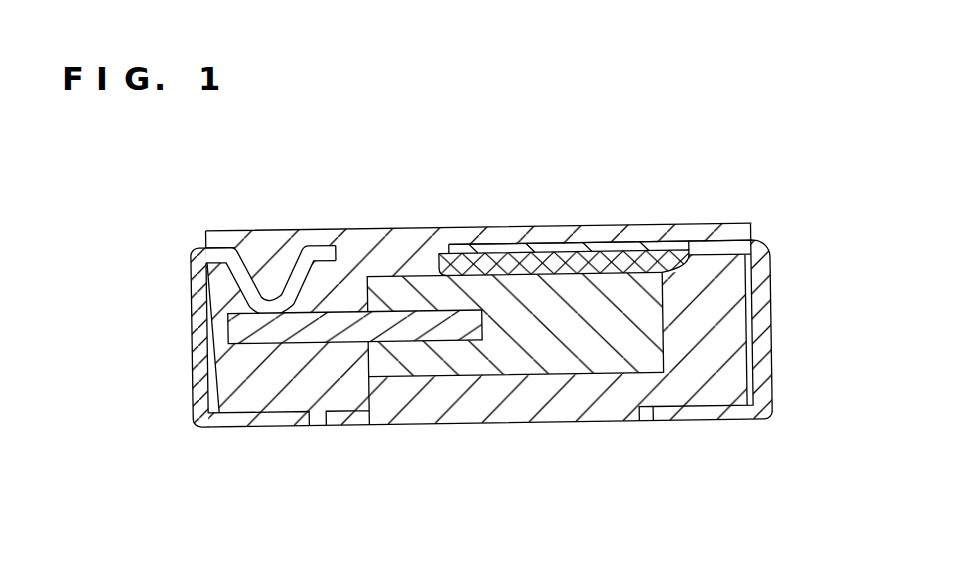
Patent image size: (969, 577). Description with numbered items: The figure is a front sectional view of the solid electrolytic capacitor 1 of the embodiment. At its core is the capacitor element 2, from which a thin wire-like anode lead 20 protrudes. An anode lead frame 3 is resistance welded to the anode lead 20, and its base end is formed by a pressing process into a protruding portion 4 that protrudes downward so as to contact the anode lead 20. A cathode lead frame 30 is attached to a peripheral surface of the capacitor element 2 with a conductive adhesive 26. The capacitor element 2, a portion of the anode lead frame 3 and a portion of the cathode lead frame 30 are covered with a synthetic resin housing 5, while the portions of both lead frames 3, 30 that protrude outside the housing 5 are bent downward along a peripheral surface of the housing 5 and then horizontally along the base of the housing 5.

The solid electrolytic capacitor 1 is at (481, 321).
The capacitor element 2 is at (558, 359).
The anode lead frame 3 is at (197, 316).
The protruding portion 4 is at (255, 242).
The synthetic resin housing 5 is at (737, 277).
The anode lead 20 is at (399, 333).
The conductive adhesive 26 is at (543, 259).
The cathode lead frame 30 is at (595, 249).